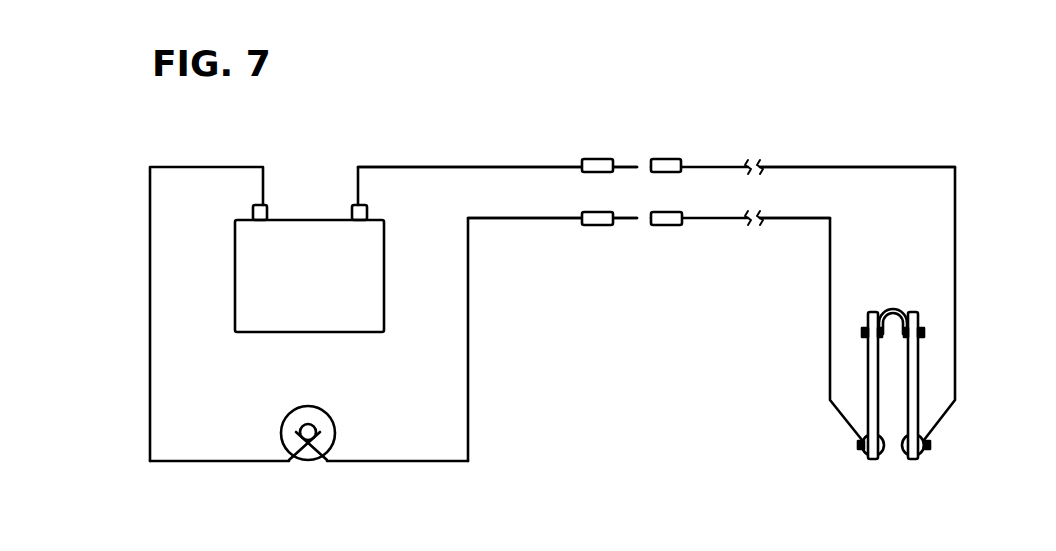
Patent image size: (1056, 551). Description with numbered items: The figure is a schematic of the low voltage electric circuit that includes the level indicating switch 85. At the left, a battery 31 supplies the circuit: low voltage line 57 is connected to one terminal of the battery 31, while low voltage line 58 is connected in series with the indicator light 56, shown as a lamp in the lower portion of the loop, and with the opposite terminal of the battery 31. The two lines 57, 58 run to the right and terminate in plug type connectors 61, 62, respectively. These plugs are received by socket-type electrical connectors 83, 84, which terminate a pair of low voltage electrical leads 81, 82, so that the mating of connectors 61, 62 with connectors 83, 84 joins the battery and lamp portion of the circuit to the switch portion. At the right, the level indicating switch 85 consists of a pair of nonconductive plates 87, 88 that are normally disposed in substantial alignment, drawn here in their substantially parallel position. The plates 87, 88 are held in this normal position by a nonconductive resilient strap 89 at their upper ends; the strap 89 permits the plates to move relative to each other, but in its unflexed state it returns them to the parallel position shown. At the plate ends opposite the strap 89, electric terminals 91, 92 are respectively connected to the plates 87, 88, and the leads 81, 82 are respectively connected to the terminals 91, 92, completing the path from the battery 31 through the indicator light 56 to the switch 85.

The battery 31 is at (248, 270).
The indicator light 56 is at (330, 415).
The low voltage line 57 is at (470, 166).
The low voltage line 58 is at (510, 219).
The plug type connector 61 is at (598, 225).
The plug type connector 62 is at (590, 158).
The low voltage electrical lead 81 is at (792, 219).
The low voltage electrical lead 82 is at (814, 166).
The socket-type electrical connector 83 is at (666, 158).
The socket-type electrical connector 84 is at (668, 225).
The level indicating switch 85 is at (862, 341).
The nonconductive plate 87 is at (868, 377).
The nonconductive plate 88 is at (920, 360).
The nonconductive resilient strap 89 is at (897, 311).
The electric terminal 91 is at (860, 444).
The electric terminal 92 is at (927, 445).